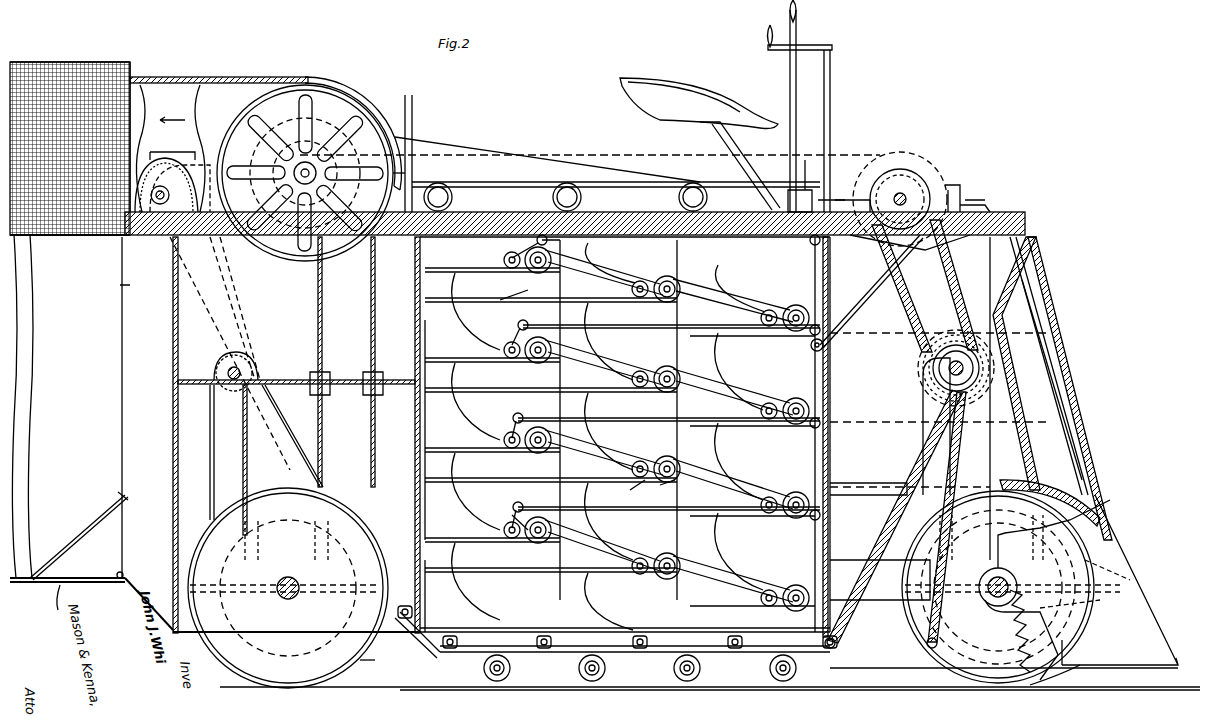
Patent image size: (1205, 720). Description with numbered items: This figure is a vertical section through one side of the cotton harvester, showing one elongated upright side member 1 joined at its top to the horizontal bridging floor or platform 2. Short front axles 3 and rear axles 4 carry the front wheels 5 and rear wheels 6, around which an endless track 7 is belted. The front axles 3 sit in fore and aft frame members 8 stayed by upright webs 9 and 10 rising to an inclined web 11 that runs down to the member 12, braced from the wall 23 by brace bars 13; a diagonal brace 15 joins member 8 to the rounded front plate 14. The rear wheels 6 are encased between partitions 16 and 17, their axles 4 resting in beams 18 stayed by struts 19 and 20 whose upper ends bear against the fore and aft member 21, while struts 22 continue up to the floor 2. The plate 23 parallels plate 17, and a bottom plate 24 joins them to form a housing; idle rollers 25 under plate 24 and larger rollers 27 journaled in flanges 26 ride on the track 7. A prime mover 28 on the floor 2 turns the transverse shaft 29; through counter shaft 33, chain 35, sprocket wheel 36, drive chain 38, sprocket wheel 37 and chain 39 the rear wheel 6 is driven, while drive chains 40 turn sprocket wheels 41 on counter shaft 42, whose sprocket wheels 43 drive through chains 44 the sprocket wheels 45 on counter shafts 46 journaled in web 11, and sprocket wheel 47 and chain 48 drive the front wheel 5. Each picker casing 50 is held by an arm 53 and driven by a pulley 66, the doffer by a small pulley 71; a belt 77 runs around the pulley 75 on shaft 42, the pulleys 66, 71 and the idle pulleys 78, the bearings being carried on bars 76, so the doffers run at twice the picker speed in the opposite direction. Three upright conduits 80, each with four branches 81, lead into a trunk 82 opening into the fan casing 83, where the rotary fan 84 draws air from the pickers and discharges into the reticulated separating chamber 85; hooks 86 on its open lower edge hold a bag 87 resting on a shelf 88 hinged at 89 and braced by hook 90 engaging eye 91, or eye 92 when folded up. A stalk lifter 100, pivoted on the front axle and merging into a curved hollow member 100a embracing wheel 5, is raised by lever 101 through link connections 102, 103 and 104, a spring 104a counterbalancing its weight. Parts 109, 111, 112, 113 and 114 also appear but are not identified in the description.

The side member 1 is at (975, 278).
The bridging or connecting structure 2 is at (138, 237).
The front axle 3 is at (994, 605).
The rear axle 4 is at (292, 600).
The front wheel 5 is at (1005, 678).
The rear wheel 6 is at (370, 658).
The endless track 7 is at (633, 688).
The fore and aft frame member 8 is at (1130, 575).
The upright plate or web 9 is at (950, 462).
The upright plate or web 10 is at (1017, 405).
The inclined plate or web 11 is at (912, 470).
The member 12 is at (860, 600).
The brace bar 13 is at (865, 490).
The curved front plate 14 is at (1085, 400).
The brace 15 is at (1060, 572).
The upright web or partition 16 is at (173, 480).
The upright web or partition 17 is at (415, 465).
The fore and aft beam 18 is at (425, 580).
The vertical web-like strut 19 is at (248, 460).
The vertical web-like strut 20 is at (355, 458).
The fore and aft member 21 is at (280, 380).
The strut 22 is at (371, 325).
The plate 23 is at (832, 392).
The bottom plate 24 is at (625, 632).
The idle roller 25 is at (425, 612).
The flange 26 is at (548, 660).
The larger idle roller 27 is at (702, 668).
The prime mover 28 is at (183, 153).
The shaft 29 is at (340, 120).
The counter shaft 33 is at (160, 187).
The driving chain 35 is at (196, 170).
The sprocket wheel 36 is at (152, 165).
The sprocket wheel 37 is at (228, 352).
The drive chain 38 is at (245, 302).
The chain 39 is at (278, 420).
The drive chain 40 is at (632, 156).
The sprocket wheel 41 is at (935, 160).
The counter shaft 42 is at (870, 245).
The sprocket wheel 43 is at (925, 178).
The driving chain 44 is at (905, 305).
The sprocket wheel 45 is at (952, 345).
The counter shaft 46 is at (945, 372).
The sprocket wheel 47 is at (960, 398).
The chain 48 is at (921, 410).
The picker casing 50 is at (505, 368).
The arm 53 is at (805, 512).
The pulley 66 is at (666, 488).
The small pulley 71 is at (630, 491).
The pulley 75 is at (910, 155).
The bar or shaft support 76 is at (520, 300).
The belt 77 is at (845, 330).
The idle pulley 78 is at (545, 245).
The upright conduit 80 is at (445, 395).
The branch 81 is at (480, 428).
The trunk 82 is at (612, 153).
The pump or fan casing 83 is at (280, 83).
The rotary fan 84 is at (393, 122).
The reticulated separating chamber 85 is at (88, 80).
The hook 86 is at (74, 240).
The bag 87 is at (73, 603).
The shelf 88 is at (82, 578).
The hinge 89 is at (124, 574).
The bracing hook 90 is at (90, 530).
The staple or eye 91 is at (128, 500).
The staple or eye 92 is at (126, 380).
The stalk lifter 100 is at (1140, 615).
The hollow member 100a is at (1090, 490).
The lever 101 is at (790, 70).
The link connection 102 is at (962, 178).
The link connection 103 is at (990, 205).
The link connection 104 is at (1045, 350).
The spring 104a is at (1030, 686).
The lever bracket 109 is at (805, 160).
The lever 111 is at (832, 110).
The handle bar 112 is at (815, 45).
The seat 113 is at (690, 80).
The link 114 is at (850, 190).